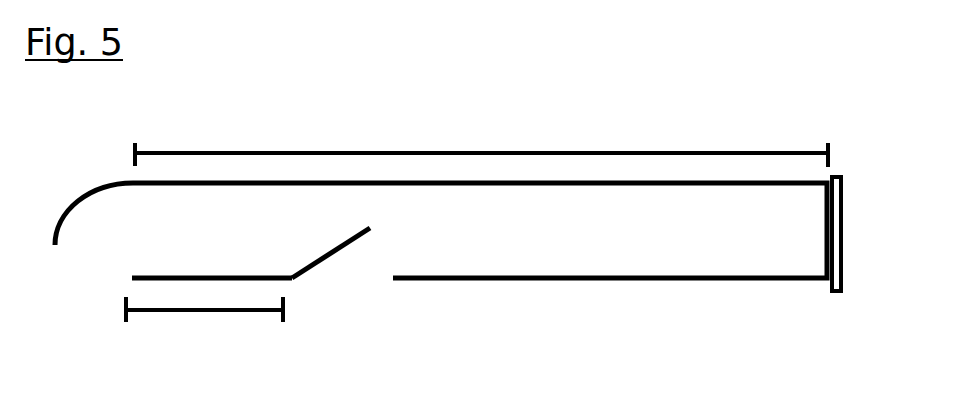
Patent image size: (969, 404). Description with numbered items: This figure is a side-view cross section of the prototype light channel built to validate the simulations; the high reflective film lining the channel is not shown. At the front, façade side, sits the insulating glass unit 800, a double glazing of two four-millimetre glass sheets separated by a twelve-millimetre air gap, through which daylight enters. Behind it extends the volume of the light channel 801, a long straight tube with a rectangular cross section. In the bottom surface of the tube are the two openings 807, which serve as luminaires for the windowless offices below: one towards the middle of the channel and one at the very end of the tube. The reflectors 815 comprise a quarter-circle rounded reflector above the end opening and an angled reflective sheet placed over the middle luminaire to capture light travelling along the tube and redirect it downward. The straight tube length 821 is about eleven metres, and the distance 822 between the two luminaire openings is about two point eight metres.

The insulating glass unit 800 is at (843, 245).
The volume of the light channel 801 is at (610, 260).
The openings 807 is at (85, 272).
The rounded reflector and reflective sheet 815 is at (77, 197).
The straight tube length 821 is at (338, 127).
The distance between the luminaire openings 822 is at (152, 312).